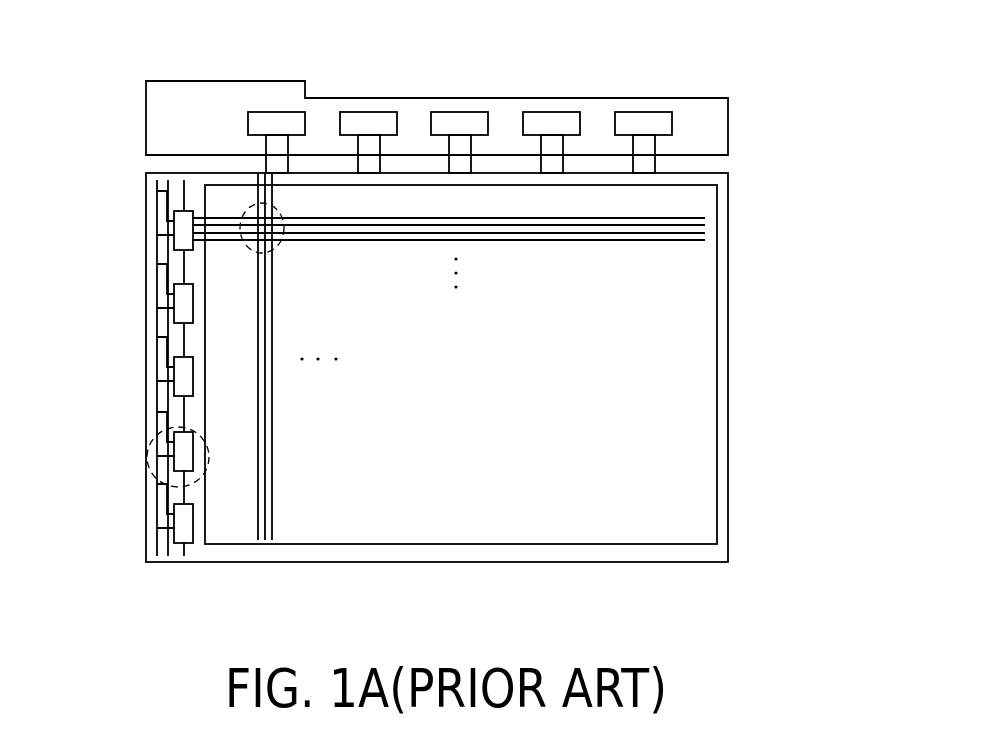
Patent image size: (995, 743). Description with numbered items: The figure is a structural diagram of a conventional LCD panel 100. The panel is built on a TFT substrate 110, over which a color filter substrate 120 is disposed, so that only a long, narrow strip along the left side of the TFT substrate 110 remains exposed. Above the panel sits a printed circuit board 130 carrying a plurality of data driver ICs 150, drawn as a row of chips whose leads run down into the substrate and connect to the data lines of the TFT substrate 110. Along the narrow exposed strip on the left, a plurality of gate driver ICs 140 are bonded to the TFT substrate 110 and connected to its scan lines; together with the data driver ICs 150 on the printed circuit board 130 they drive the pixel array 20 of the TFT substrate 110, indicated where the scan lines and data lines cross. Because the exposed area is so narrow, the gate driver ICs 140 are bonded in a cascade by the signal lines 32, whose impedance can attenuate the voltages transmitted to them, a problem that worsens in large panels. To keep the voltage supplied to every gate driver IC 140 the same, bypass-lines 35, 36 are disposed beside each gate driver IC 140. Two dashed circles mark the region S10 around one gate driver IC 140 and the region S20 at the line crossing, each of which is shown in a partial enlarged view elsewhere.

The LCD panel 100 is at (800, 687).
The TFT substrate 110 is at (157, 545).
The color filter substrate 120 is at (687, 437).
The printed circuit board 130 is at (717, 127).
The gate driver ICs 140 is at (173, 220).
The data driver ICs 150 is at (460, 120).
The pixel array 20 is at (289, 262).
The signal lines 32 is at (180, 412).
The bypass-lines 35 is at (158, 430).
The bypass-lines 36 is at (167, 472).
The region S10 is at (155, 447).
The region S20 is at (245, 255).